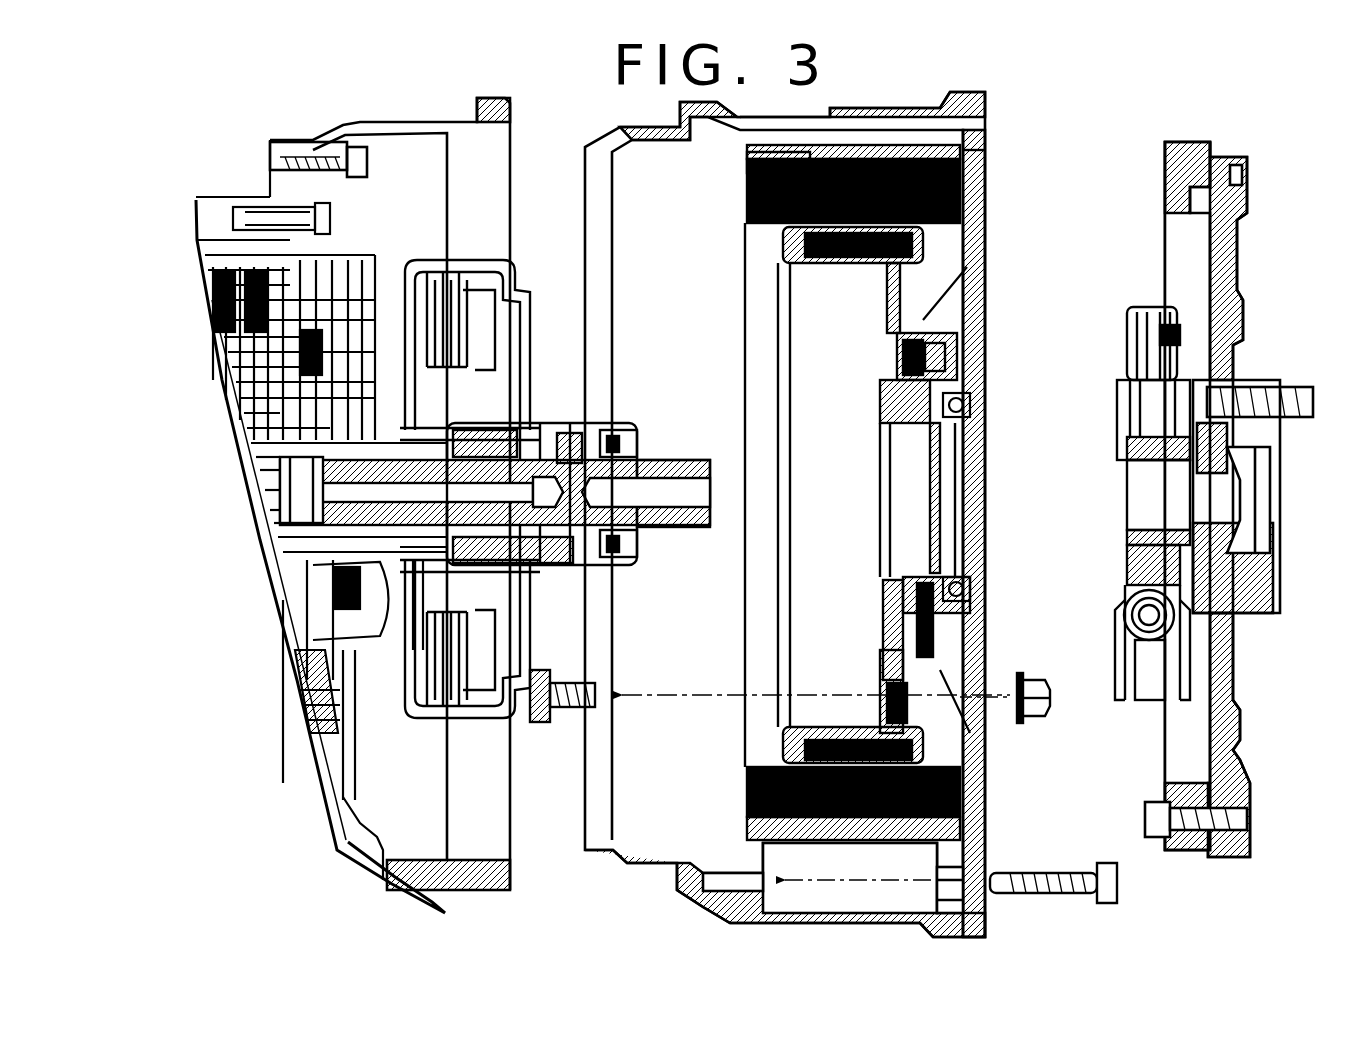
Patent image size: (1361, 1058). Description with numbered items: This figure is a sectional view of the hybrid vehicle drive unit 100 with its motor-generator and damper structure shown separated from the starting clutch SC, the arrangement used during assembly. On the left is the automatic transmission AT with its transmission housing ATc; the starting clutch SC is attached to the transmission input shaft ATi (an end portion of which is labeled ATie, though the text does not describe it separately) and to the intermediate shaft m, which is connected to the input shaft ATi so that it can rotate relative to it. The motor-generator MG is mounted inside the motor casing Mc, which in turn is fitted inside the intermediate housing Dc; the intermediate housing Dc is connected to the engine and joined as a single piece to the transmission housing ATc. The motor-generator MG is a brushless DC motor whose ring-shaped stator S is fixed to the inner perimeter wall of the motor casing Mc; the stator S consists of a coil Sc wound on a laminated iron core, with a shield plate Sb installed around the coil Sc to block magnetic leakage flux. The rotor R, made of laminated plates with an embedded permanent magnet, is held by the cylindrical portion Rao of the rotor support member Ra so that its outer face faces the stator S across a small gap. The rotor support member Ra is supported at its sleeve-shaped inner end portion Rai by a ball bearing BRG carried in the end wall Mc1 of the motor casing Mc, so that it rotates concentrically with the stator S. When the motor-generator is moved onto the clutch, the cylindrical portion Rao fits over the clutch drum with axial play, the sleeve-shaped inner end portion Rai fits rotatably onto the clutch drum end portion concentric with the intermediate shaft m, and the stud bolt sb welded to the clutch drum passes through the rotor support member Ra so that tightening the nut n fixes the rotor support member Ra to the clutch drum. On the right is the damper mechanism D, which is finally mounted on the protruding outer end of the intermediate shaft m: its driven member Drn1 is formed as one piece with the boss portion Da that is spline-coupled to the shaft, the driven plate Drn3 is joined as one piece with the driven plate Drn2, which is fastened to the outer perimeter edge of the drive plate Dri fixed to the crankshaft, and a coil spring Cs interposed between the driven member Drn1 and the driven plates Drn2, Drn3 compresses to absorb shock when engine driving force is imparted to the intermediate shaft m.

The hybrid vehicle drive unit 100 is at (270, 747).
The automatic transmission AT is at (242, 186).
The transmission housing ATc is at (345, 125).
The input shaft ATi is at (386, 530).
The input shaft end portion ATie is at (385, 512).
The starting clutch SC is at (415, 263).
The intermediate housing Dc is at (640, 125).
The motor-generator MG is at (735, 270).
The stator S is at (857, 147).
The coil Sc is at (745, 192).
The shield plate Sb is at (975, 240).
The motor casing Mc is at (992, 150).
The end wall Mc1 is at (970, 215).
The rotor R is at (782, 272).
The rotor support member Ra is at (900, 260).
The cylindrical portion Rao is at (950, 265).
The sleeve-shaped inner end portion Rai is at (897, 425).
The ball bearing BRG is at (960, 405).
The intermediate shaft m is at (672, 528).
The stud bolt sb is at (556, 720).
The nut n is at (1030, 672).
The damper mechanism D is at (1268, 265).
The drive plate Dri is at (1237, 723).
The driven member Drn1 is at (1128, 350).
The driven plate Drn2 is at (1163, 737).
The driven plate Drn3 is at (1133, 337).
The boss portion Da is at (1125, 525).
The coil spring Cs is at (1133, 643).